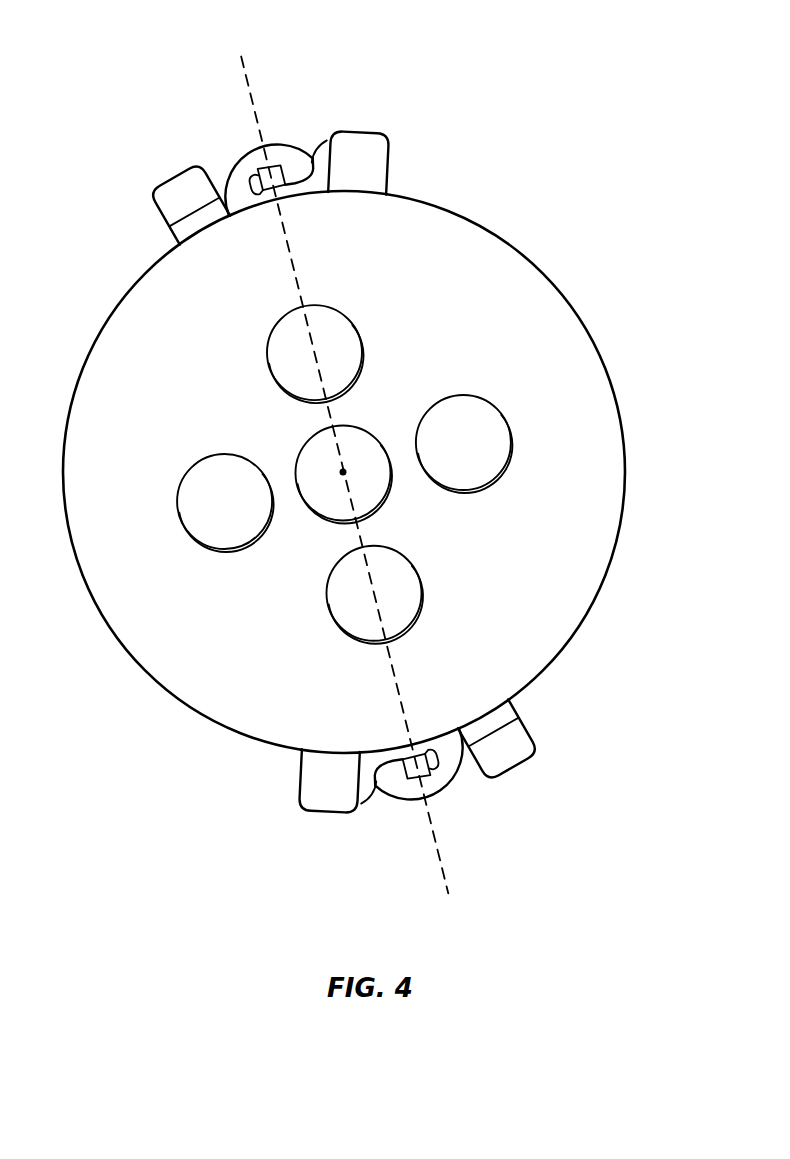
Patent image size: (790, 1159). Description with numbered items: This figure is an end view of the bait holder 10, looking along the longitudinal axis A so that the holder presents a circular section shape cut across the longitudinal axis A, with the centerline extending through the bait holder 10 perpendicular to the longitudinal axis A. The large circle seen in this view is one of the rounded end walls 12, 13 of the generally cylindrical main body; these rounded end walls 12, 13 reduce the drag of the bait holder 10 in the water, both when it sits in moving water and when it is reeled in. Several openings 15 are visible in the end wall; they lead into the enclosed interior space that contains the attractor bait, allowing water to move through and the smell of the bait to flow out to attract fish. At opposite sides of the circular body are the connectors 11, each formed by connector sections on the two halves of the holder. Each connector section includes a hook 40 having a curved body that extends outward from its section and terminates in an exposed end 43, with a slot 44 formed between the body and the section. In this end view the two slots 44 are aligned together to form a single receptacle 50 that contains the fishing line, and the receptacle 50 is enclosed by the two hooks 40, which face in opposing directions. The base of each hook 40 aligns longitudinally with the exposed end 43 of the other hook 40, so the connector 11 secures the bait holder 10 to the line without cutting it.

The bait holder 10 is at (605, 183).
The connector 11 is at (254, 138).
The rounded end wall 12 is at (332, 472).
The rounded end wall 13 is at (300, 550).
The openings 15 is at (356, 331).
The hook 40 is at (240, 184).
The exposed end 43 is at (318, 152).
The slot 44 is at (311, 184).
The receptacle 50 is at (246, 174).
The longitudinal axis A is at (348, 465).